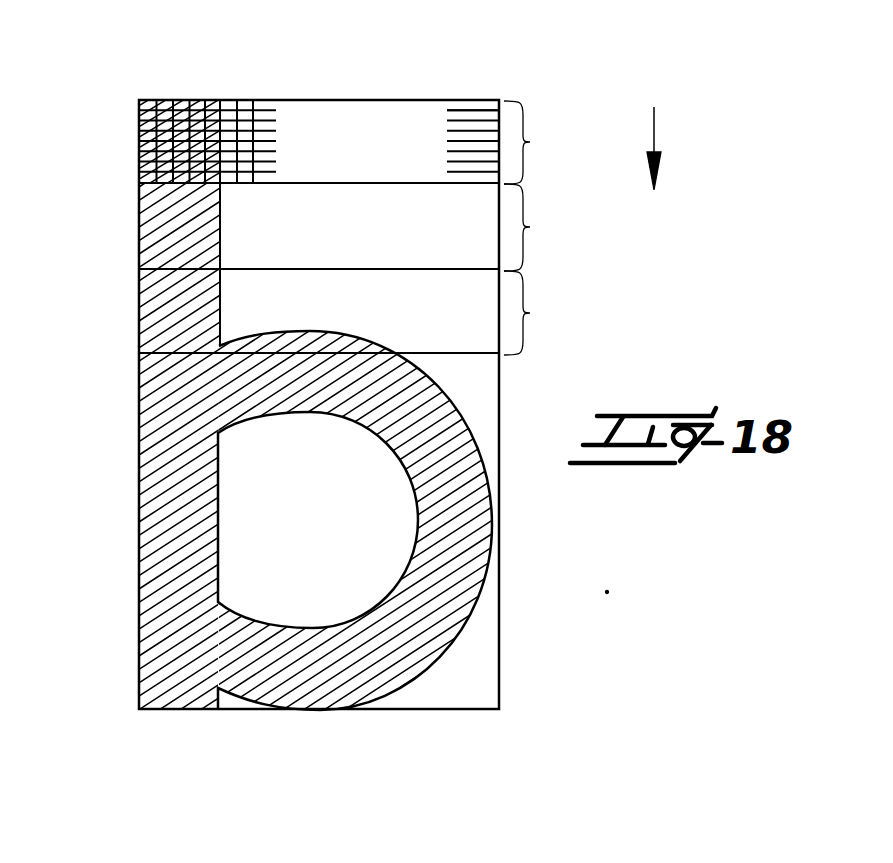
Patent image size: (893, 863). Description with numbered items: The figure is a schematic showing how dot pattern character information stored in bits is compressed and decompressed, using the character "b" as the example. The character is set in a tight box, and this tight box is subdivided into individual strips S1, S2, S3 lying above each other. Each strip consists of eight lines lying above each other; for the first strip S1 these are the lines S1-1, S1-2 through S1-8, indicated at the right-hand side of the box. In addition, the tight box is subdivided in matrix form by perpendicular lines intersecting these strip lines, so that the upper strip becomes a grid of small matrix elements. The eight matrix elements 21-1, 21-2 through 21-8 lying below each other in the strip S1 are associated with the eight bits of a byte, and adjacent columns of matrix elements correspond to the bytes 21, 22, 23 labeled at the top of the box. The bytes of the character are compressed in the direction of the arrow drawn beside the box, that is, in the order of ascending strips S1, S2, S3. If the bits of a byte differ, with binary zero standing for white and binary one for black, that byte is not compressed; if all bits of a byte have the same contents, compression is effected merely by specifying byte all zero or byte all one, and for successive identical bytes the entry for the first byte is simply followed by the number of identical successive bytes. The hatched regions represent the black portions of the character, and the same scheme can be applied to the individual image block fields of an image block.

The byte 21 is at (146, 100).
The byte 22 is at (172, 100).
The byte 23 is at (178, 100).
The matrix element 21-1 is at (140, 100).
The matrix element 21-2 is at (140, 112).
The matrix element 21-8 is at (140, 183).
The strip S1 is at (530, 142).
The line S1-1 is at (504, 103).
The line S1-2 is at (504, 113).
The line S1-8 is at (504, 183).
The strip S2 is at (530, 227).
The strip S3 is at (530, 313).